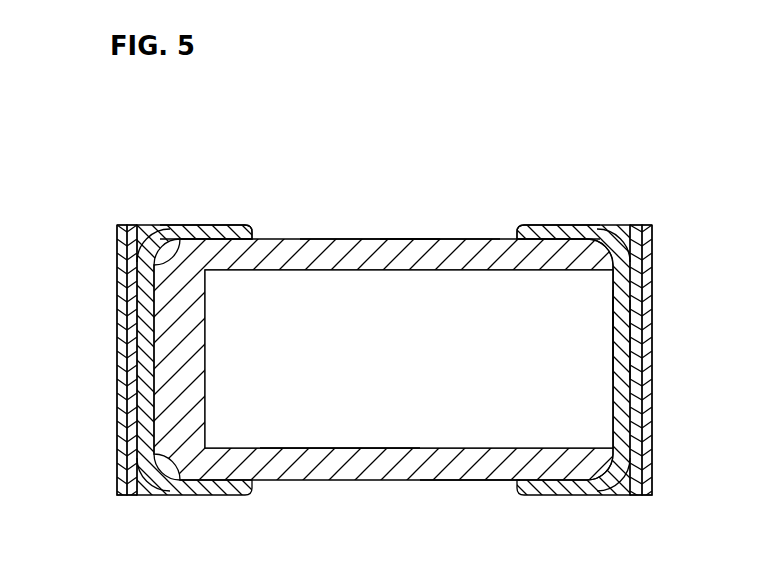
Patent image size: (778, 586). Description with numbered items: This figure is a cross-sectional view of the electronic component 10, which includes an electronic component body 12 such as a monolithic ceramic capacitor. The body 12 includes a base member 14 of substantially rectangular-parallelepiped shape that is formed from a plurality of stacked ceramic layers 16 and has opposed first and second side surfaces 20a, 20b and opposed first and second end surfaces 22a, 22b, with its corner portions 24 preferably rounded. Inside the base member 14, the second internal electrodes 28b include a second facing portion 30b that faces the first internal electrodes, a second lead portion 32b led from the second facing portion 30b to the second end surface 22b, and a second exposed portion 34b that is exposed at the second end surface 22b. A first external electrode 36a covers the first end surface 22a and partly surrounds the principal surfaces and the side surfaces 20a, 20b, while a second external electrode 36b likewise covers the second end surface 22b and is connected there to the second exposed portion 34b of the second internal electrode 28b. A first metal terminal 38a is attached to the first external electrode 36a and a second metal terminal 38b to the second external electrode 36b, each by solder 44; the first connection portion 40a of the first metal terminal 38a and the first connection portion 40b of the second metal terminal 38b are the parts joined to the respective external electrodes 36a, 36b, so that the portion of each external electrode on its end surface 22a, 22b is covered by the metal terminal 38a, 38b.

The electronic component 10 is at (58, 144).
The electronic component body 12 is at (292, 236).
The base member 14 is at (366, 239).
The ceramic layers 16 is at (397, 248).
The first side surface 20a is at (475, 481).
The second side surface 20b is at (455, 239).
The first end surface 22a is at (135, 311).
The second end surface 22b is at (627, 311).
The corner portions 24 is at (152, 232).
The second internal electrodes 28b is at (333, 452).
The second facing portion 30b is at (408, 400).
The second lead portion 32b is at (595, 302).
The second exposed portion 34b is at (615, 340).
The first external electrode 36a is at (218, 225).
The second external electrode 36b is at (543, 223).
The first metal terminal 38a is at (117, 228).
The second metal terminal 38b is at (653, 228).
The first connection portion 40a is at (117, 283).
The first connection portion 40b is at (645, 280).
The solder 44 is at (133, 402).